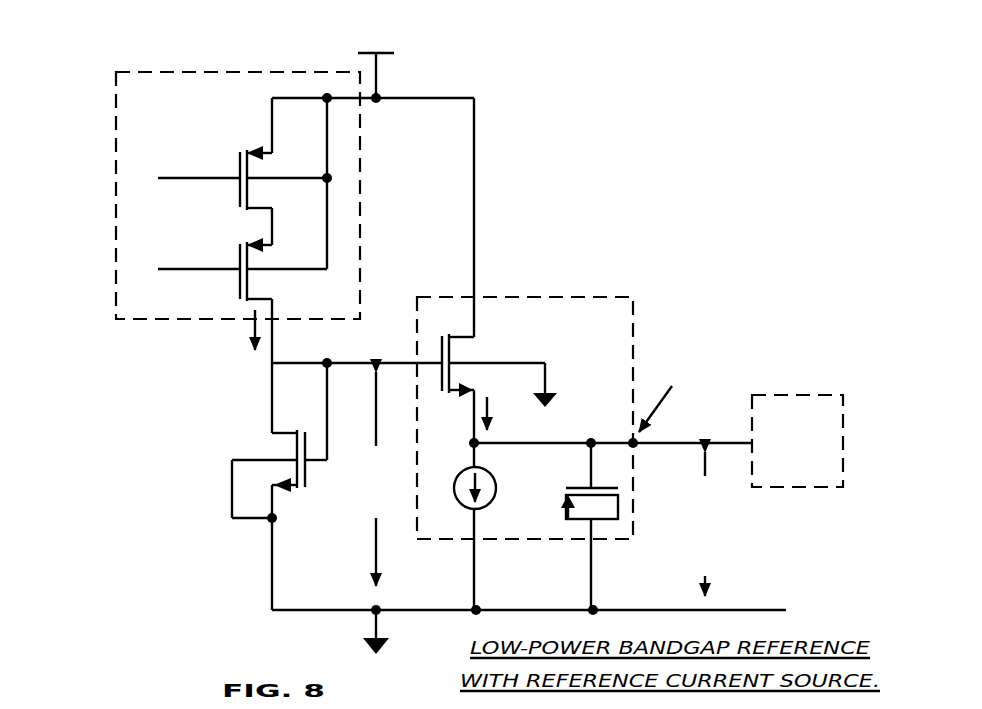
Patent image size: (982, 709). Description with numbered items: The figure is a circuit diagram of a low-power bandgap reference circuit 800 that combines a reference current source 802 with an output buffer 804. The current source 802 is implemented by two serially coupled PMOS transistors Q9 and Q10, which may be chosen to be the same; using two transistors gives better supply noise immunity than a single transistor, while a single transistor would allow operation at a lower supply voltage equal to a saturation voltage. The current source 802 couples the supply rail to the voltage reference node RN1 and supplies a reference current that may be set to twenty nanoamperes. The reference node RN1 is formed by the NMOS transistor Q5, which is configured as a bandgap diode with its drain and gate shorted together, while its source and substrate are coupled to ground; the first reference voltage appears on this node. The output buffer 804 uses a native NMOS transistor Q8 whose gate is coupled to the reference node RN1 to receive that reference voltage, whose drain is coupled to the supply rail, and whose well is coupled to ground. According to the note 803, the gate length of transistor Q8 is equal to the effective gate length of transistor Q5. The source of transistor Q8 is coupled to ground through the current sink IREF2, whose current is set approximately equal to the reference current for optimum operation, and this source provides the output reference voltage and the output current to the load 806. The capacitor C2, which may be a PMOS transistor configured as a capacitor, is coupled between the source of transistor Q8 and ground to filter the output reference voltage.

The low-power bandgap reference circuit 800 is at (135, 46).
The current source 802 is at (153, 103).
The note 803 is at (548, 209).
The output buffer 804 is at (533, 324).
The load 806 is at (780, 424).
The PMOS transistor Q9 is at (245, 171).
The PMOS transistor Q10 is at (242, 300).
The NMOS transistor Q5 is at (279, 486).
The native NMOS transistor Q8 is at (503, 388).
The voltage reference node RN1 is at (344, 351).
The current sink IREF2 is at (502, 526).
The capacitor C2 is at (627, 512).